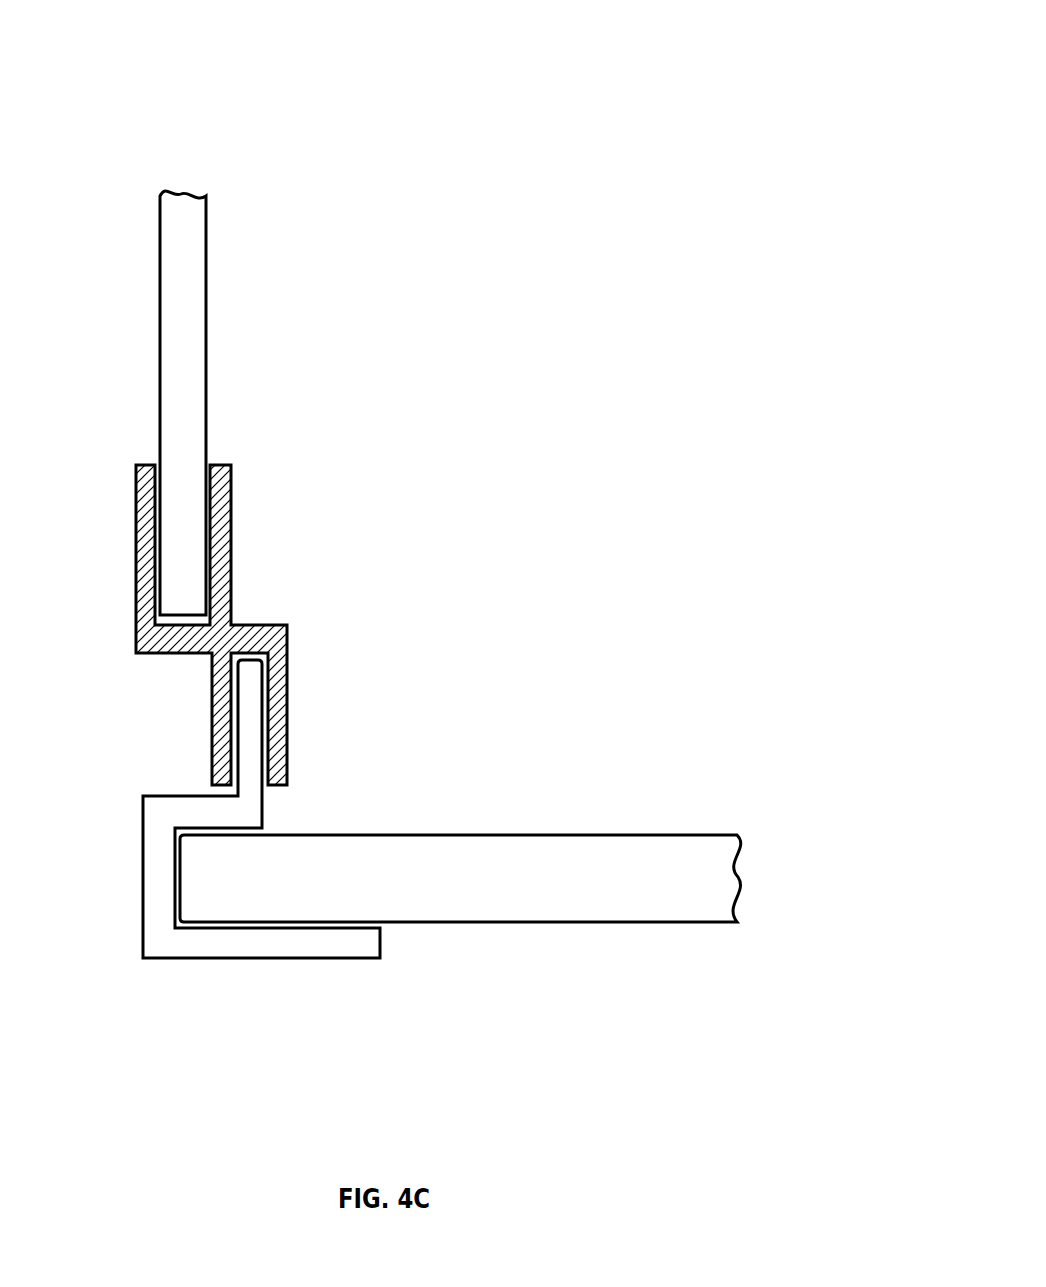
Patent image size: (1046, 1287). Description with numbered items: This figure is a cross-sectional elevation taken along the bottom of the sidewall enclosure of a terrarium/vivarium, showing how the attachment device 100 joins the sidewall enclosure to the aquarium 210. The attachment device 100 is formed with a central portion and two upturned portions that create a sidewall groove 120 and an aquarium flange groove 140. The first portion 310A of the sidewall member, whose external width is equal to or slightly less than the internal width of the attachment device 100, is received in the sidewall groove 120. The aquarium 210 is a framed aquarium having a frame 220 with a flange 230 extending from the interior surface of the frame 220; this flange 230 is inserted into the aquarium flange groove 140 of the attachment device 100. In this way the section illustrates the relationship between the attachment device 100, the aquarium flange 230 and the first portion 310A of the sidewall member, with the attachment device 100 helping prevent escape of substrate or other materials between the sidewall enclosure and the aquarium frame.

The first portion of the sidewall member 310A is at (180, 331).
The attachment device 100 is at (134, 648).
The sidewall groove 120 is at (148, 536).
The aquarium flange groove 140 is at (216, 724).
The frame 220 is at (211, 962).
The flange 230 is at (266, 814).
The aquarium 210 is at (601, 926).